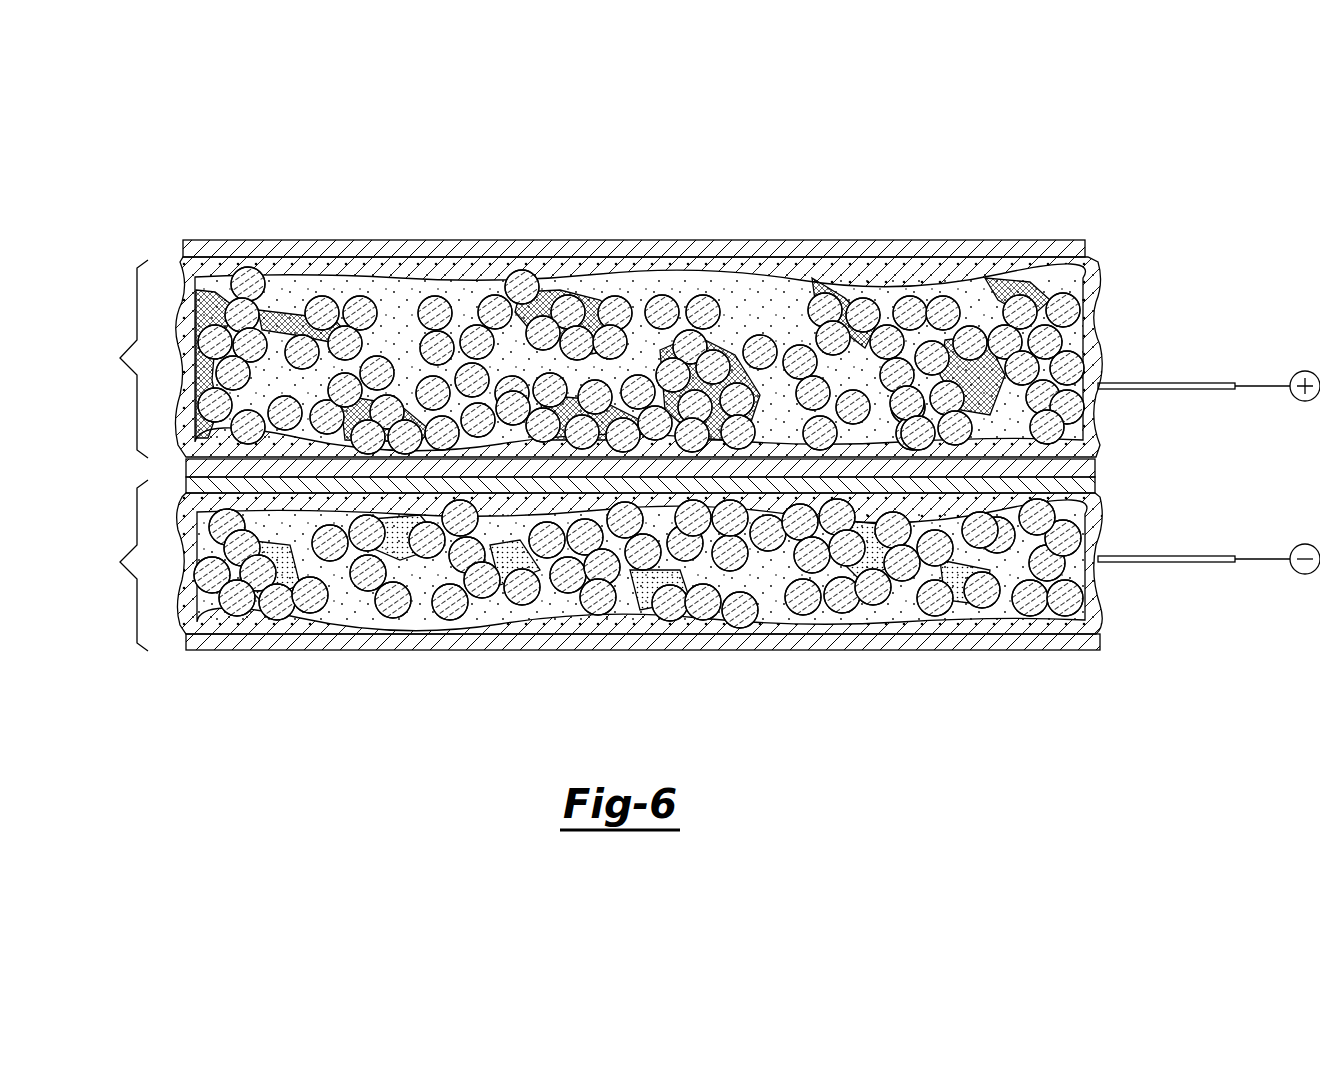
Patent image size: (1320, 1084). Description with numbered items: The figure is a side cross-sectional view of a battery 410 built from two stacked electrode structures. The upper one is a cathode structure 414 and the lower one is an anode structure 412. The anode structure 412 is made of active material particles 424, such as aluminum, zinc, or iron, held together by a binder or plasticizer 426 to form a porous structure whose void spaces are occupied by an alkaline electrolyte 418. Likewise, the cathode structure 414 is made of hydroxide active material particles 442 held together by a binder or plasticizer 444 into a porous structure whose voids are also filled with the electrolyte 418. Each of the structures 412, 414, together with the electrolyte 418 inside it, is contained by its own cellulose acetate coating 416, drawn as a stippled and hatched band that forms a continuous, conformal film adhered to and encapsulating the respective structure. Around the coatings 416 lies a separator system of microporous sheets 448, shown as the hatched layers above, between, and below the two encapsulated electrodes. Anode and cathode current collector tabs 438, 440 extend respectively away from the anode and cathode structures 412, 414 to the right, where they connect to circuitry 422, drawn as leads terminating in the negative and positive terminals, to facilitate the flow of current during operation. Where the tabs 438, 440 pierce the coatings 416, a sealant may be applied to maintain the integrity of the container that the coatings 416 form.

The battery 410 is at (197, 716).
The anode structure 412 is at (581, 590).
The cathode structure 414 is at (582, 322).
The cellulose acetate coating 416 is at (1098, 284).
The electrolyte 418 is at (332, 285).
The circuitry 422 is at (1258, 392).
The active material particles 424 is at (212, 537).
The binder or plasticizer 426 is at (300, 600).
The anode current collector tab 438 is at (1195, 555).
The cathode current collector tab 440 is at (1195, 382).
The active material particles 442 is at (248, 280).
The binder or plasticizer 444 is at (490, 290).
The microporous sheets 448 is at (215, 240).